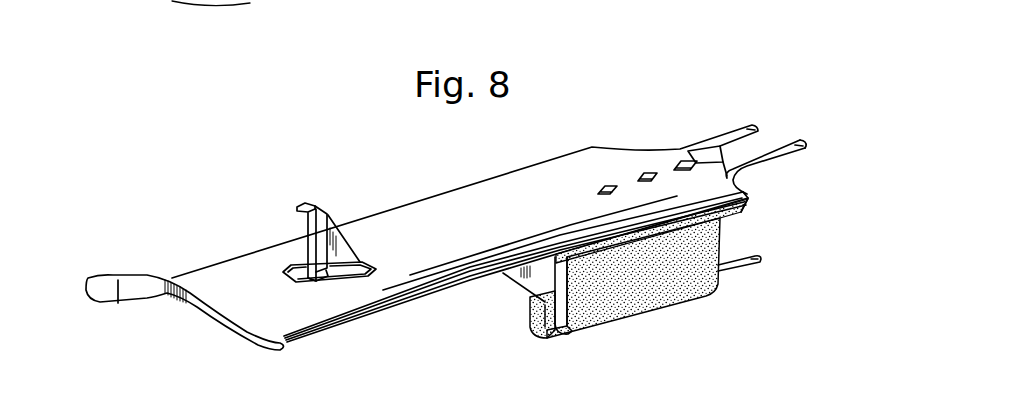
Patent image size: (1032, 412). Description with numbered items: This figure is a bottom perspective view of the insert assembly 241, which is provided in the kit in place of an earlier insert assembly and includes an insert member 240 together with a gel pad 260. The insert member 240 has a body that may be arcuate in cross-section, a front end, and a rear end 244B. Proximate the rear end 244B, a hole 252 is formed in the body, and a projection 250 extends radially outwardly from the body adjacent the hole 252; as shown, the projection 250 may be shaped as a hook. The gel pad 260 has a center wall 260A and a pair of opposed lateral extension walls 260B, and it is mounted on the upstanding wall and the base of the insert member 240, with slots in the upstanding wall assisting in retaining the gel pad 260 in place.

The insert member 240 is at (477, 175).
The insert assembly 241 is at (711, 41).
The rear end 244B is at (117, 2).
The projection 250 is at (303, 206).
The hole 252 is at (362, 262).
The gel pad 260 is at (532, 327).
The center wall 260A is at (683, 300).
The lateral extension walls 260B is at (724, 212).